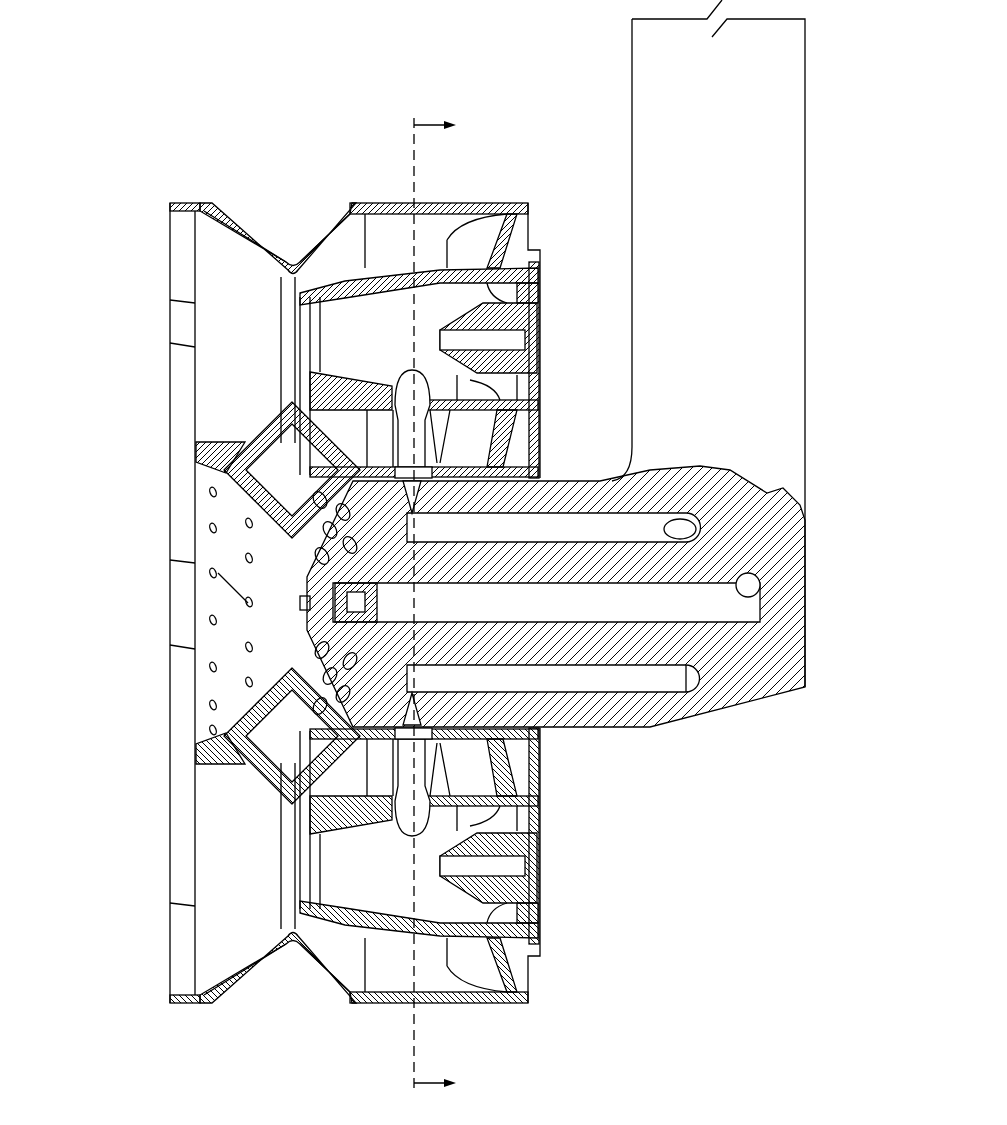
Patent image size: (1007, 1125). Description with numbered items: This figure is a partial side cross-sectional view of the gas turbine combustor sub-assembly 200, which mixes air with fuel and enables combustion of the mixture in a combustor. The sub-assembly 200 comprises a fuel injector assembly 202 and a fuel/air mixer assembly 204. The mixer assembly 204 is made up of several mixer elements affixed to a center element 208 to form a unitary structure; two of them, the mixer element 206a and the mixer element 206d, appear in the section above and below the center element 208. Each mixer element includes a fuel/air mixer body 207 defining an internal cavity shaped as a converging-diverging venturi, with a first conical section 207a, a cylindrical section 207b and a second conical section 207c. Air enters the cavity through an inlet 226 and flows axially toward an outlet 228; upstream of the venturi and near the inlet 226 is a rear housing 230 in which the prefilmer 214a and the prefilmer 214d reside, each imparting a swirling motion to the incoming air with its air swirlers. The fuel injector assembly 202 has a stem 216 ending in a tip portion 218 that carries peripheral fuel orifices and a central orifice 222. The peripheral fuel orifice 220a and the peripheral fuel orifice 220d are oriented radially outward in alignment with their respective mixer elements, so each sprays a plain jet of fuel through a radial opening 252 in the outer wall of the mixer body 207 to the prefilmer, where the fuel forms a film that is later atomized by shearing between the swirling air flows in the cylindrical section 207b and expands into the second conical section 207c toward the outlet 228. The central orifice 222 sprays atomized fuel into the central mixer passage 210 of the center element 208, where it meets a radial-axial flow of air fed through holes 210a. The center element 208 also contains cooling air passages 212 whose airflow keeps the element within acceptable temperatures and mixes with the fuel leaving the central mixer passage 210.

The gas turbine combustor sub-assembly 200 is at (118, 85).
The fuel injector assembly 202 is at (820, 202).
The fuel/air mixer assembly 204 is at (374, 103).
The mixer element 206a is at (257, 207).
The mixer element 206d is at (285, 1035).
The fuel/air mixer body 207 is at (190, 198).
The first conical section 207a is at (341, 202).
The cylindrical section 207b is at (293, 262).
The second conical section 207c is at (276, 205).
The center element 208 is at (157, 708).
The central mixer passage 210 is at (214, 588).
The holes 210a is at (218, 470).
The cooling air passages 212 is at (212, 530).
The prefilmer 214a is at (578, 290).
The prefilmer 214d is at (562, 866).
The stem 216 is at (808, 76).
The tip portion 218 is at (300, 548).
The peripheral fuel orifice 220a is at (485, 474).
The peripheral fuel orifice 220d is at (480, 736).
The central orifice 222 is at (300, 603).
The inlet 226 is at (530, 240).
The outlet 228 is at (170, 270).
The rear housing 230 is at (432, 200).
The radial opening 252 is at (437, 462).